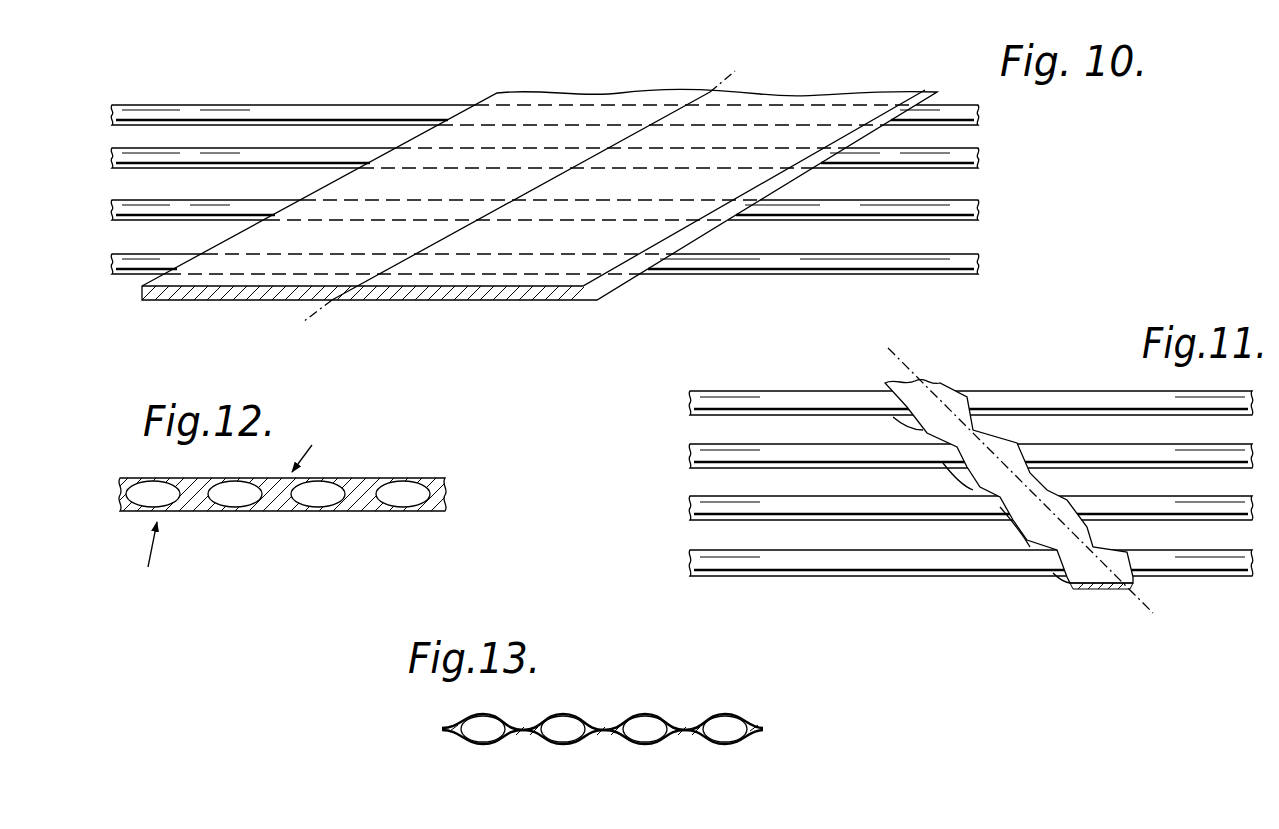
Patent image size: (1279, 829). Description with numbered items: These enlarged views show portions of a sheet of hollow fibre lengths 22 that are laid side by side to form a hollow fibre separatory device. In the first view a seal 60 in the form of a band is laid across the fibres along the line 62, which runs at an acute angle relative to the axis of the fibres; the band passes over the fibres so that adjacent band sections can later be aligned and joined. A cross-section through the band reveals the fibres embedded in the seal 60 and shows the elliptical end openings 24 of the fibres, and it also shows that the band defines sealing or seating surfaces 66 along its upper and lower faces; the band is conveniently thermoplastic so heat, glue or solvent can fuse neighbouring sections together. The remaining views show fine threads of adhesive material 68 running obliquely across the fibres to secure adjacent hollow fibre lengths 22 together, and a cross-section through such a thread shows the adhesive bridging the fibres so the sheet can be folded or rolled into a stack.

In FIG. 10, the hollow fibre lengths 22 is at (304, 158).
In FIG. 12, the hollow fibre lengths 22 is at (428, 505).
In FIG. 13, the hollow fibre lengths 22 is at (737, 740).
In FIG. 12, the end openings 24 is at (402, 498).
In FIG. 10, the seal 60 is at (518, 115).
In FIG. 12, the seal 60 is at (365, 487).
In FIG. 10, the line 62 is at (702, 67).
In FIG. 12, the sealing or seating surfaces 66 is at (243, 514).
In FIG. 11, the fine threads of adhesive material 68 is at (943, 384).
In FIG. 13, the fine threads of adhesive material 68 is at (682, 725).